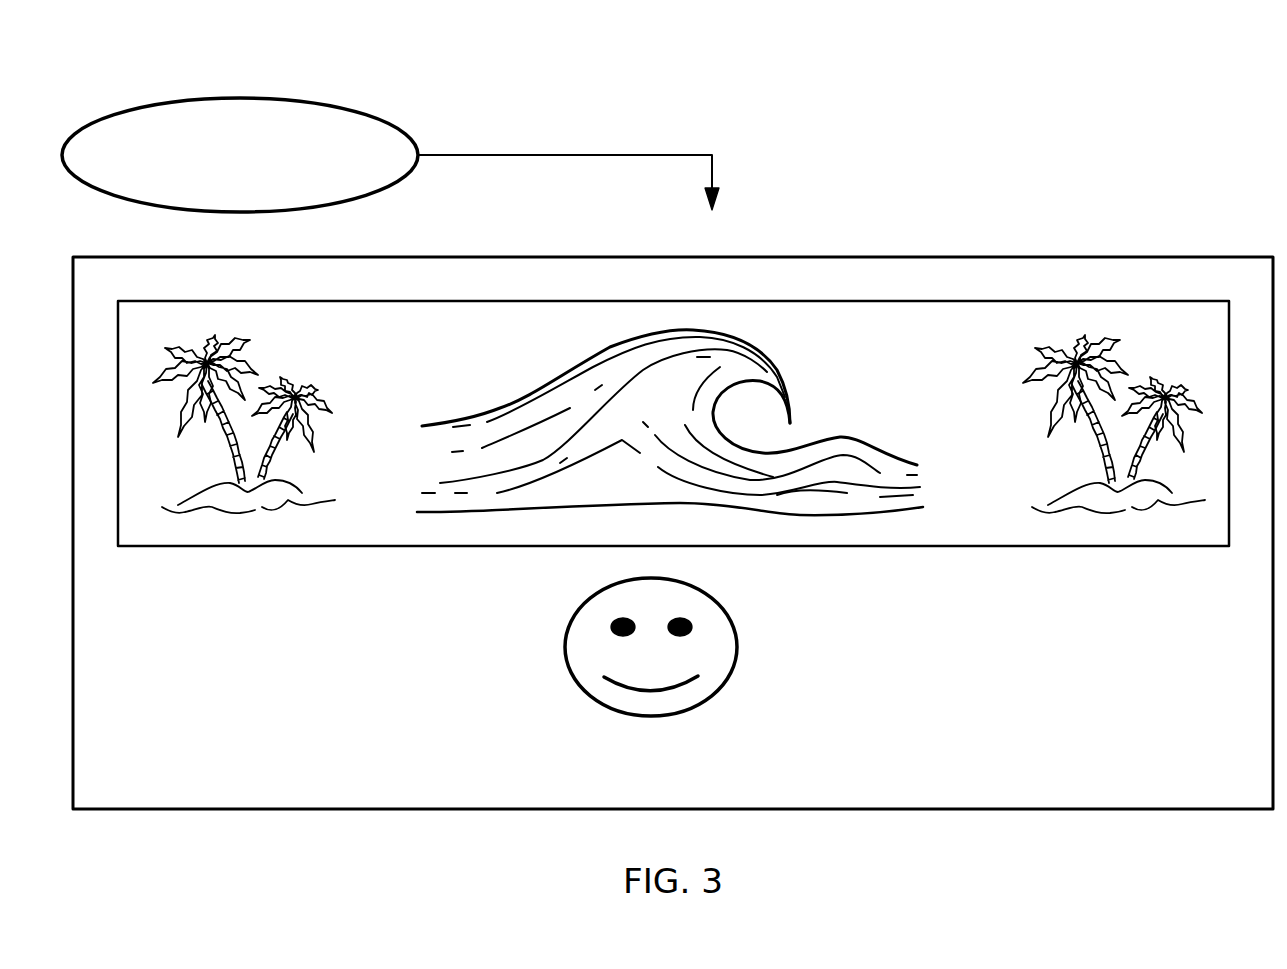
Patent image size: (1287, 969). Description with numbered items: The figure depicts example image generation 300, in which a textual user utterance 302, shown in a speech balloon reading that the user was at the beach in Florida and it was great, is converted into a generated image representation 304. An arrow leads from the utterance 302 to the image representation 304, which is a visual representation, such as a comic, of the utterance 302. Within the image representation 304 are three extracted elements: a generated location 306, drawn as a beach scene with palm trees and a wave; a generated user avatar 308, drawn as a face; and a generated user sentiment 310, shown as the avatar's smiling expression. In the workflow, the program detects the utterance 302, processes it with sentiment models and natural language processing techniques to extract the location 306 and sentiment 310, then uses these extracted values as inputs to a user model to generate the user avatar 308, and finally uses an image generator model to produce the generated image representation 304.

The image generation 300 is at (1133, 91).
The user utterance 302 is at (231, 99).
The generated image representation 304 is at (969, 230).
The generated location 306 is at (812, 546).
The generated user avatar 308 is at (736, 681).
The generated user sentiment 310 is at (717, 652).